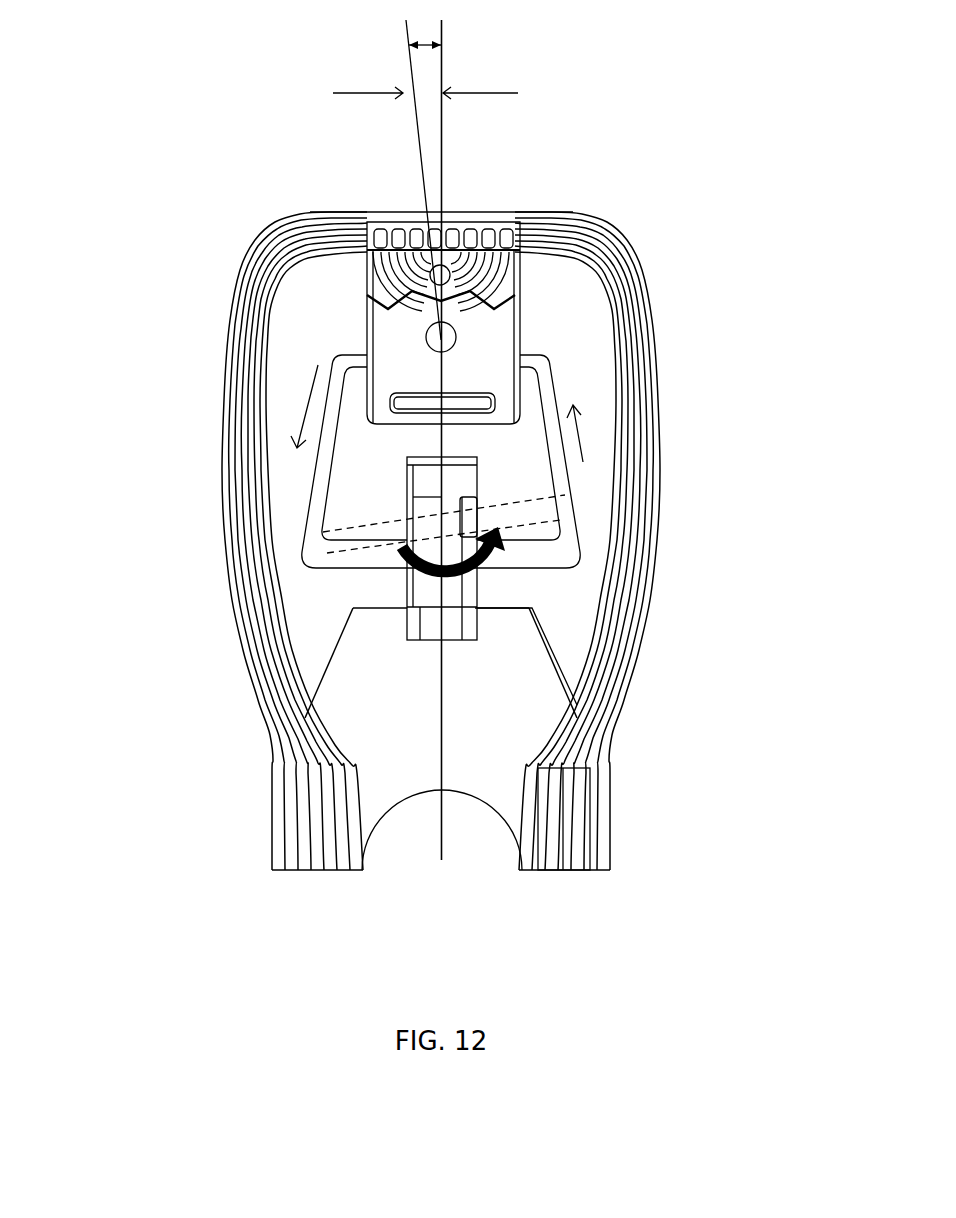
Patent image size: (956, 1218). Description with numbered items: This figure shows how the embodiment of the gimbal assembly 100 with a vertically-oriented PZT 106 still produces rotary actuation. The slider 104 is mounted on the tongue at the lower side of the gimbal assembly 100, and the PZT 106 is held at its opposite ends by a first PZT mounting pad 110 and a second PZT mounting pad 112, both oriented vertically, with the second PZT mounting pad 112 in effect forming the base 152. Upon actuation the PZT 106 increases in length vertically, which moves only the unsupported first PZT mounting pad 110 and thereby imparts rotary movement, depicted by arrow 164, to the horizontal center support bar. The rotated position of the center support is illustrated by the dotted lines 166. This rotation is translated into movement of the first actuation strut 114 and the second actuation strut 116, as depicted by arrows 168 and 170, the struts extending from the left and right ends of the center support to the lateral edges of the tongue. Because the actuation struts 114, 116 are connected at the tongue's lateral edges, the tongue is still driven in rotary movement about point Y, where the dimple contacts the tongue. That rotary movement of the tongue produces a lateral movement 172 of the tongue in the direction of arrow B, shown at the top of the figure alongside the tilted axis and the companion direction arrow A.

The gimbal assembly 100 is at (294, 147).
The slider 104 is at (483, 310).
The PZT 106 is at (405, 600).
The first PZT mounting pad 110 is at (338, 372).
The second PZT mounting pad 112 is at (635, 657).
The base 152 is at (480, 650).
The first actuation strut 114 is at (407, 463).
The second actuation strut 116 is at (557, 373).
The arrow 164 is at (490, 568).
The dotted lines 166 is at (523, 500).
The arrow 168 is at (262, 394).
The arrow 170 is at (588, 428).
The lateral movement 172 is at (420, 53).
The point Y is at (377, 308).
The direction A is at (368, 111).
The direction B is at (480, 118).